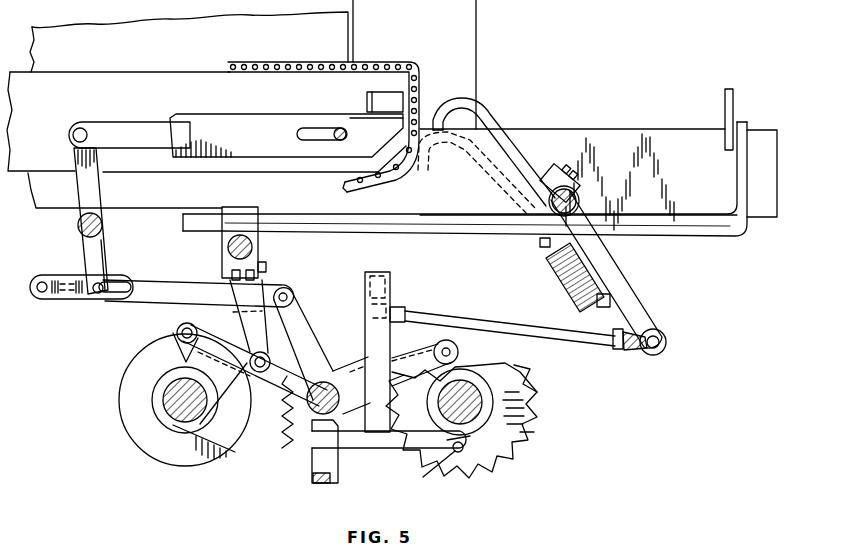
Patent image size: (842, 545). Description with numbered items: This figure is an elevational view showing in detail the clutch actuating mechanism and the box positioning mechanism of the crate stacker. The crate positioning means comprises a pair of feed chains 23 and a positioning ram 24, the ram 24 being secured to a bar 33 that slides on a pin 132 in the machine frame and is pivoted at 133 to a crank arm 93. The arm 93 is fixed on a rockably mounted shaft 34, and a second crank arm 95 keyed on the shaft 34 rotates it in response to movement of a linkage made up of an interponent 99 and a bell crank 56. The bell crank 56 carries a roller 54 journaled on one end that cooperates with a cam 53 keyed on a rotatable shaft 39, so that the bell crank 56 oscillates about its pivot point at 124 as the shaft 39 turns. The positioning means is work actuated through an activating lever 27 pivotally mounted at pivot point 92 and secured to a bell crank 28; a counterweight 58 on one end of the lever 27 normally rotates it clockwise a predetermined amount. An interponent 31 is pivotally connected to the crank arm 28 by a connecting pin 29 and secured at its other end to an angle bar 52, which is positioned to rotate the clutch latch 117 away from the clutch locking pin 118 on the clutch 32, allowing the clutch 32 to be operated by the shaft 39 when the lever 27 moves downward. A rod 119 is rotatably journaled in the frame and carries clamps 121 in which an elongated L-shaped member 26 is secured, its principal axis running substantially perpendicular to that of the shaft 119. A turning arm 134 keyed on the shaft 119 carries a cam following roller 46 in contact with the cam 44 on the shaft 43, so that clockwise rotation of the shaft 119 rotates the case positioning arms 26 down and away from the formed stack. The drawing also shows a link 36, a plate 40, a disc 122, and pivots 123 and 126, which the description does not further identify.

The feed chains 23 is at (377, 63).
The positioning ram 24 is at (366, 98).
The L-shaped member 26 is at (705, 238).
The activating lever 27 is at (491, 112).
The bell crank 28 is at (630, 287).
The connecting pin 29 is at (665, 342).
The interponent 31 is at (497, 320).
The clutch 32 is at (512, 456).
The bar 33 is at (241, 115).
The shaft 34 is at (105, 227).
The link 36 is at (60, 269).
The shaft 39 is at (520, 425).
The plate 40 is at (478, 61).
The shaft 43 is at (165, 400).
The cam 44 is at (228, 455).
The cam following roller 46 is at (300, 398).
The angle bar 52 is at (391, 291).
The cam 53 is at (520, 376).
The roller 54 is at (458, 352).
The bell crank 56 is at (326, 365).
The counterweight 58 is at (556, 285).
The pivot point 92 is at (566, 182).
The crank arm 93 is at (97, 190).
The second crank arm 95 is at (105, 262).
The interponent 99 is at (190, 281).
The clutch latch 117 is at (357, 448).
The clutch locking pin 118 is at (455, 454).
The rod 119 is at (254, 249).
The clamp 121 is at (224, 240).
The disc 122 is at (122, 380).
The pivot 123 is at (176, 330).
The pivot point 124 is at (313, 425).
The pivot 126 is at (245, 355).
The pin 132 is at (332, 141).
The pivot 133 is at (88, 122).
The turning arm 134 is at (293, 320).